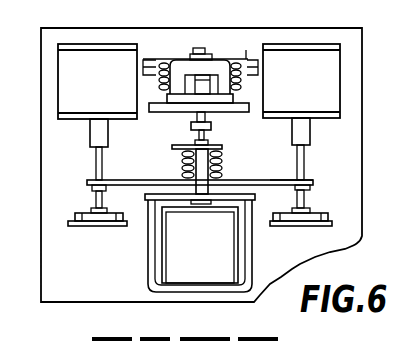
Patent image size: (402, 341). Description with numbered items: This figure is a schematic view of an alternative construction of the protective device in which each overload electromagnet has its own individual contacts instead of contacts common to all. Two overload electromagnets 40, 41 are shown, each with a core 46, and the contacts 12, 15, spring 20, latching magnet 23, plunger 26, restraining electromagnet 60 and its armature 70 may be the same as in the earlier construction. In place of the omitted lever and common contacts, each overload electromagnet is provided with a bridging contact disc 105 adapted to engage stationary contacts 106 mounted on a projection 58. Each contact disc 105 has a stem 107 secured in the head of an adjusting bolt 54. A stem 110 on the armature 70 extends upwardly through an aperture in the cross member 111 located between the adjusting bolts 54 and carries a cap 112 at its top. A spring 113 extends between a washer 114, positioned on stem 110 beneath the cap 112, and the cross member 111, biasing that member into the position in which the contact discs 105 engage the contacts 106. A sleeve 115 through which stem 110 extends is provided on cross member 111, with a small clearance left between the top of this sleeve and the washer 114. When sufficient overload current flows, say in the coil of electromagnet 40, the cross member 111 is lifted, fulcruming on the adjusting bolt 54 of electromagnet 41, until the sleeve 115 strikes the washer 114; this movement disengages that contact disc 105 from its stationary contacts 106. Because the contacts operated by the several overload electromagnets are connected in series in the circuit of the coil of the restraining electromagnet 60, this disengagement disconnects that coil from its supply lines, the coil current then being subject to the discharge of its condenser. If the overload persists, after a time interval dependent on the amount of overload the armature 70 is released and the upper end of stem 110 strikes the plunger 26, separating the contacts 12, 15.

The overload electromagnet 40 is at (97, 81).
The overload electromagnet 41 is at (301, 81).
The contact 12 is at (143, 68).
The contact 15 is at (246, 46).
The latching magnet 23 is at (243, 82).
The spring 20 is at (249, 98).
The plunger 26 is at (207, 118).
The cap 112 is at (194, 143).
The spring 113 is at (194, 148).
The washer 114 is at (223, 151).
The sleeve 115 is at (210, 166).
The stem 110 is at (166, 183).
The cross member 111 is at (276, 180).
The core 46 is at (108, 144).
The adjusting bolt 54 is at (96, 161).
The stem 107 is at (94, 201).
The contact disc 105 is at (78, 213).
The stationary contact 106 is at (74, 216).
The projection 58 is at (85, 226).
The armature 70 is at (145, 197).
The restraining electromagnet 60 is at (200, 245).